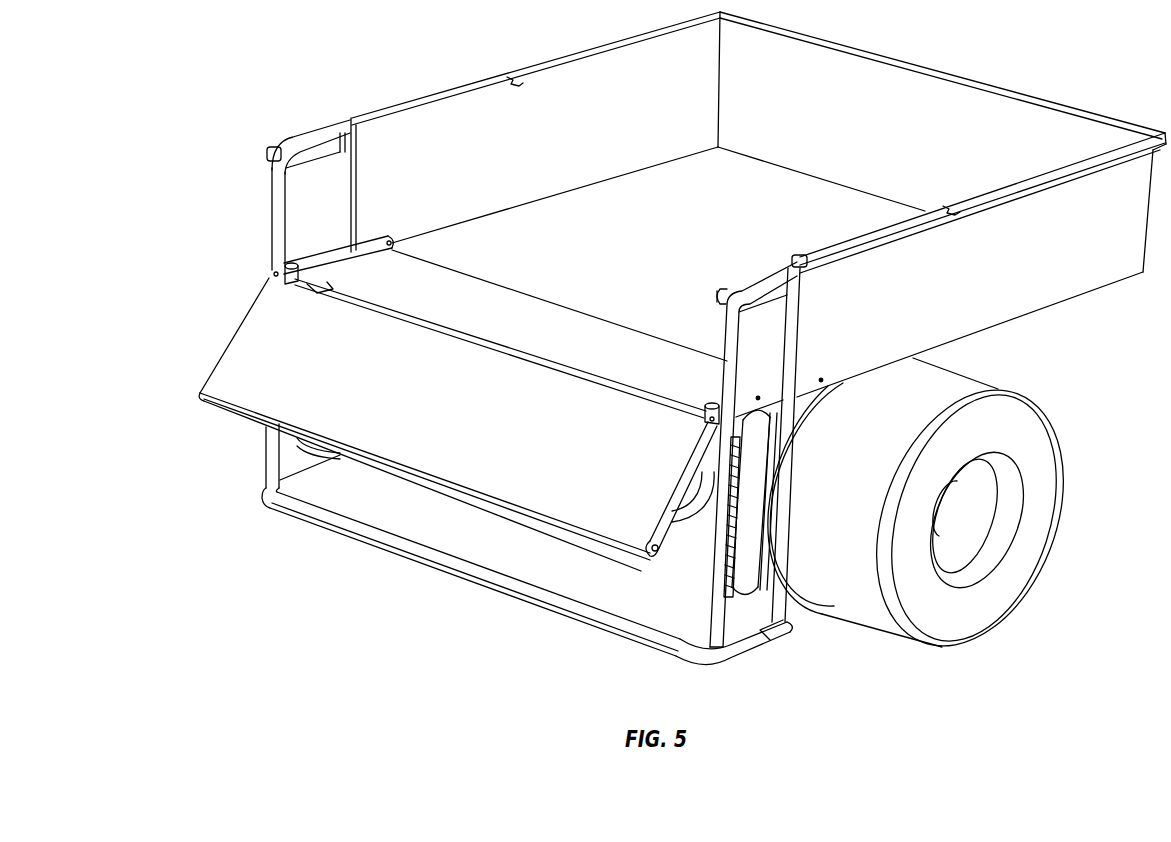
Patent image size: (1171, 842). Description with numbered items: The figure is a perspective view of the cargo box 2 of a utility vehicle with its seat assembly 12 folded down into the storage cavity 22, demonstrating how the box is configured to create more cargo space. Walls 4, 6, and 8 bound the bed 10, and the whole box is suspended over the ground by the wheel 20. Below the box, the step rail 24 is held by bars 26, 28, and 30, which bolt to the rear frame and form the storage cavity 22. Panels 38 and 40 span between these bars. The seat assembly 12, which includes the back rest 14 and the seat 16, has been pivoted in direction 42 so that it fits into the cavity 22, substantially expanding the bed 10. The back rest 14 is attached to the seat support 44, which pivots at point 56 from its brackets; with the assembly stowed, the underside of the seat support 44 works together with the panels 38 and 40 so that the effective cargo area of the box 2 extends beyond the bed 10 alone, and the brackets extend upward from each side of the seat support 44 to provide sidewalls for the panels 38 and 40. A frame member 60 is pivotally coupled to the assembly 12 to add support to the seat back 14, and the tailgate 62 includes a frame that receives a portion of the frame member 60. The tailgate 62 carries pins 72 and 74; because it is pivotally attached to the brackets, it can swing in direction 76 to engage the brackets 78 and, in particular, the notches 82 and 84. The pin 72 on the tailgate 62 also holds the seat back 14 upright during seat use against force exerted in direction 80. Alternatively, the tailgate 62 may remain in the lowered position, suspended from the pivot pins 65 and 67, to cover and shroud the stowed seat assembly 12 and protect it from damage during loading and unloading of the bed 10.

The cargo box 2 is at (1050, 78).
The wall 4 is at (1002, 280).
The wall 6 is at (424, 165).
The wall 8 is at (893, 144).
The bed 10 is at (688, 240).
The seat assembly 12 is at (237, 270).
The back rest 14 is at (475, 508).
The seat 16 is at (763, 504).
The wheel 20 is at (958, 378).
The storage cavity 22 is at (604, 594).
The step rail 24 is at (467, 559).
The bar 26 is at (717, 599).
The bar 28 is at (781, 541).
The bar 30 is at (270, 203).
The panel 38 is at (772, 370).
The panel 40 is at (330, 229).
The direction 42 is at (198, 308).
The seat support 44 is at (546, 340).
The pivot point 56 is at (392, 238).
The frame member 60 is at (673, 517).
The tailgate 62 is at (442, 415).
The pivot pin 65 is at (707, 420).
The pivot pin 67 is at (279, 283).
The pin 72 is at (653, 554).
The pin 74 is at (200, 396).
The direction 76 is at (302, 545).
The bracket 78 is at (732, 283).
The direction 80 is at (278, 147).
The notch 82 is at (718, 291).
The notch 84 is at (270, 148).